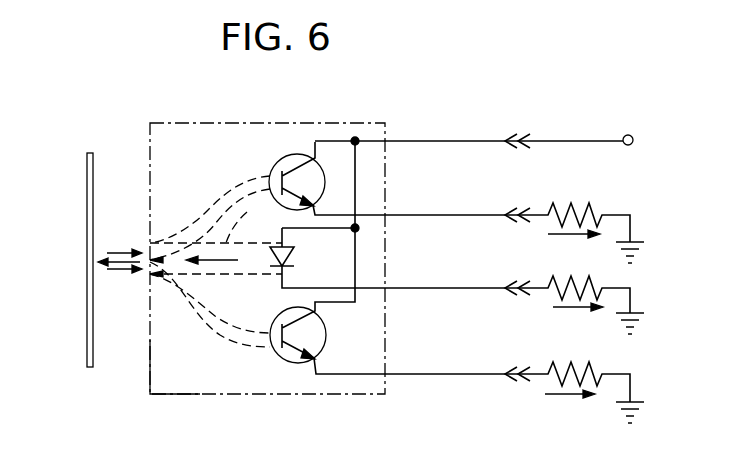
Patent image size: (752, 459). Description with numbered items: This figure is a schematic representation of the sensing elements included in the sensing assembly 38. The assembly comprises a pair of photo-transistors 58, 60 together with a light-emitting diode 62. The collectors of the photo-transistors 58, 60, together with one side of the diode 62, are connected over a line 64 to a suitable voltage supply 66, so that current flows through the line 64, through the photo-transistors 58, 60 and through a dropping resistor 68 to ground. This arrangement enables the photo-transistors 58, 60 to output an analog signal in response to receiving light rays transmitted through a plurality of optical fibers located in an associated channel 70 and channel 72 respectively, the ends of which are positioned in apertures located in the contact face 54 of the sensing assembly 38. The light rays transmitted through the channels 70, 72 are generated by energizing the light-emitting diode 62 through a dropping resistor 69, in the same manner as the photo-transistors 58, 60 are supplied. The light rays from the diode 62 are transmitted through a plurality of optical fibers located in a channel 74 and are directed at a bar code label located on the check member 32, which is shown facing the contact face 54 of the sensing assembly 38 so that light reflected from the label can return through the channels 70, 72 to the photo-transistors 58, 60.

The check member 32 is at (87, 163).
The sensing assembly 38 is at (192, 123).
The contact face 54 is at (150, 380).
The photo-transistor 58 is at (296, 154).
The photo-transistor 60 is at (296, 363).
The light-emitting diode 62 is at (293, 252).
The line 64 is at (475, 140).
The voltage supply 66 is at (634, 134).
The dropping resistor 68 is at (578, 207).
The dropping resistor 69 is at (600, 285).
The channel 70 is at (200, 213).
The channel 72 is at (225, 332).
The channel 74 is at (250, 223).